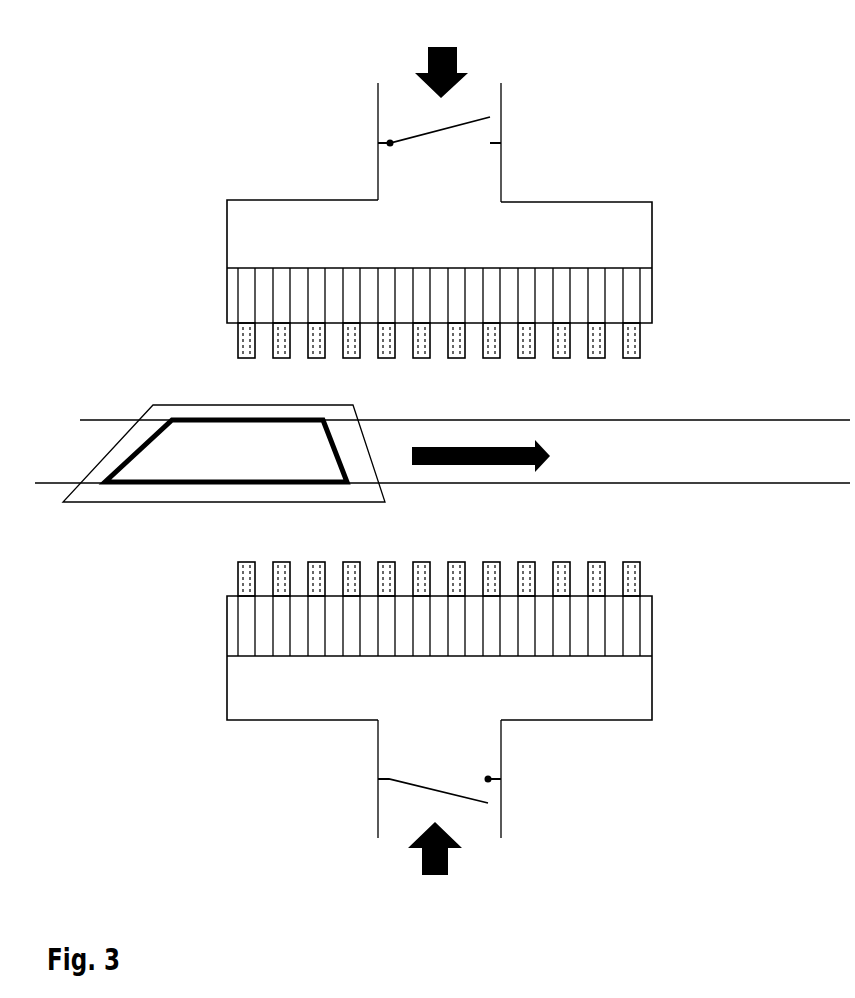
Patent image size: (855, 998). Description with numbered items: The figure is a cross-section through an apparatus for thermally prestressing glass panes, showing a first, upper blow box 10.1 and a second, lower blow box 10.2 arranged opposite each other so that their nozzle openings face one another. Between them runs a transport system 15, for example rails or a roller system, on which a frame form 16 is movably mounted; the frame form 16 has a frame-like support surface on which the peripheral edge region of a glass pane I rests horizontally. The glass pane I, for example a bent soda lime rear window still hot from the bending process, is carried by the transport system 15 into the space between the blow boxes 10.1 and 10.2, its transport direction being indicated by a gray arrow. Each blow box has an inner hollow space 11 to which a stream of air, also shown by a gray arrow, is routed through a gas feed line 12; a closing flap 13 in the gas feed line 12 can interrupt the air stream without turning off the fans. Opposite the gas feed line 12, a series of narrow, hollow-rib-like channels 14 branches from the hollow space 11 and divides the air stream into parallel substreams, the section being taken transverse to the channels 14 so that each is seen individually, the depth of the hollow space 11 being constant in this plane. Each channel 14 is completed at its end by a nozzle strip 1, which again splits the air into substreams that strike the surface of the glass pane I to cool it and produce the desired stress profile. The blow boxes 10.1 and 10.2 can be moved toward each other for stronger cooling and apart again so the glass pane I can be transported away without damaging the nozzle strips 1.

The nozzle strip 1 is at (240, 358).
The hollow space 11 is at (390, 250).
The gas feed line 12 is at (400, 98).
The closing flap 13 is at (412, 135).
The channels 14 is at (247, 297).
The transport system 15 is at (115, 420).
The frame form 16 is at (205, 418).
The glass pane I is at (153, 405).
The upper blow box 10.1 is at (703, 47).
The lower blow box 10.2 is at (714, 553).